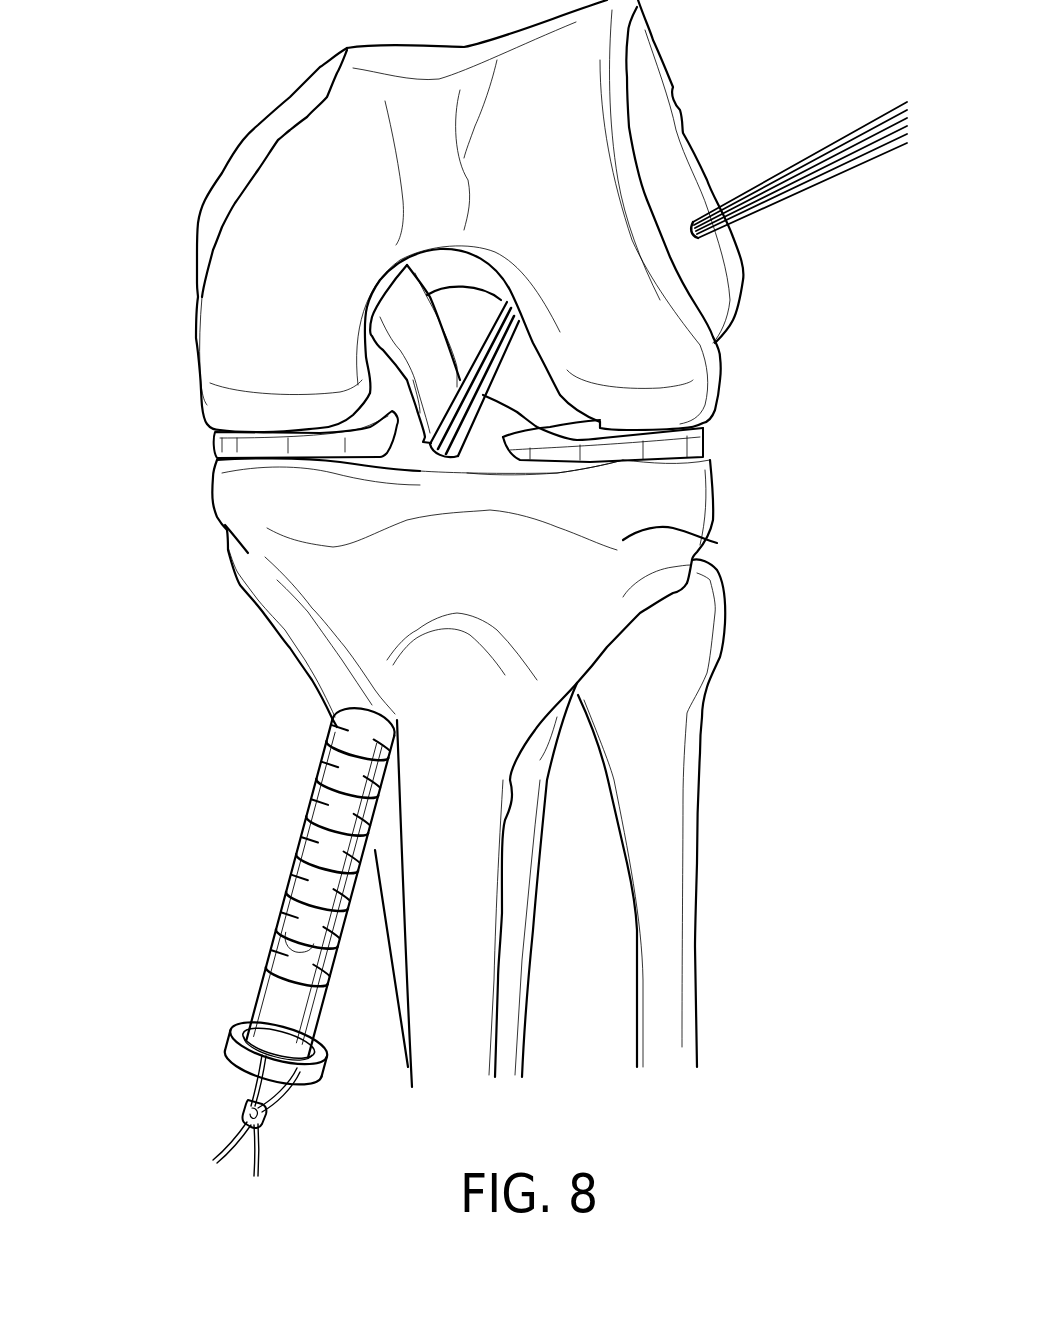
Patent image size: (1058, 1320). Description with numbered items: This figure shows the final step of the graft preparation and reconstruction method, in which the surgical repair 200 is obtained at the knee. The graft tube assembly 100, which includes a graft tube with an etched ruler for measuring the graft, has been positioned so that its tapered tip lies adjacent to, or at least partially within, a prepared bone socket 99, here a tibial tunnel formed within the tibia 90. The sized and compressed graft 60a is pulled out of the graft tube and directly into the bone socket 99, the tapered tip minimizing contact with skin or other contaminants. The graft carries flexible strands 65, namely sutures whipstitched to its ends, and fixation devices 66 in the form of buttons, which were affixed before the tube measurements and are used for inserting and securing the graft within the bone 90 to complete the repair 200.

The flexible strands 65 is at (798, 182).
The bone 90 is at (693, 537).
The surgical repair 200 is at (148, 667).
The graft tube assembly 100 is at (282, 894).
The compressed graft 60a is at (277, 938).
The fixation devices 66 is at (245, 1110).
The bone socket 99 is at (408, 733).